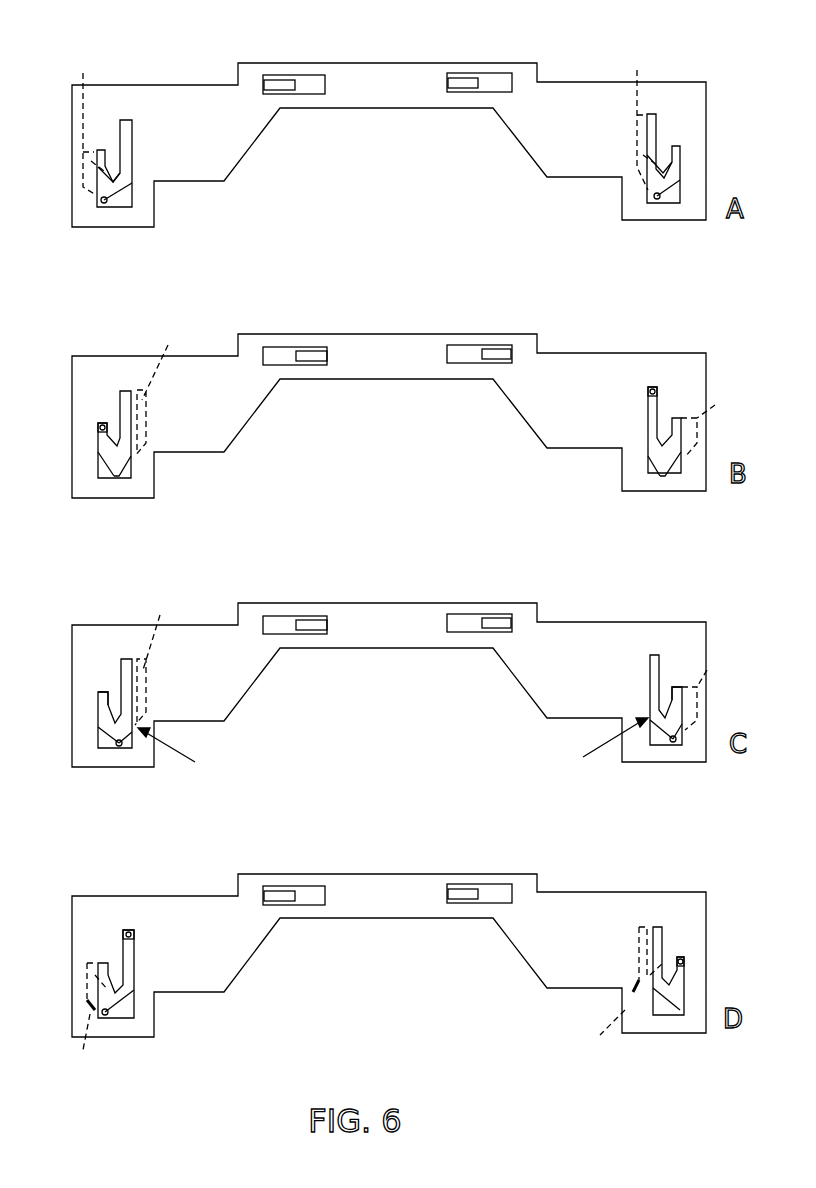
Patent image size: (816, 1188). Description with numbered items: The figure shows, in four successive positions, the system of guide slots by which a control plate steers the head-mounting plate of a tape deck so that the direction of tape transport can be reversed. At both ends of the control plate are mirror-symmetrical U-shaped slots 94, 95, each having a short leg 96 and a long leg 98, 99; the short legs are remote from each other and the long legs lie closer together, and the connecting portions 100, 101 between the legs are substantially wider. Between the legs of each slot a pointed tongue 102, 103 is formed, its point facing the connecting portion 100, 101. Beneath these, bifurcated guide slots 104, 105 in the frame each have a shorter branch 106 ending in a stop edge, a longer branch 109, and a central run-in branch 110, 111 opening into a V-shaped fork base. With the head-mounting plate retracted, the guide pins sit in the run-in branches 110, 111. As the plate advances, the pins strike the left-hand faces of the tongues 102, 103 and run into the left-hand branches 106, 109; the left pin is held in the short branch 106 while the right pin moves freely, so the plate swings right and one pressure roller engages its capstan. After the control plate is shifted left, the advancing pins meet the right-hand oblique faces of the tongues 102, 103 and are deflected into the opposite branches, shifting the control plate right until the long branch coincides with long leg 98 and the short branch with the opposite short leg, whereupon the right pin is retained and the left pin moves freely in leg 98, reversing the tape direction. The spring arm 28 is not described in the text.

The spring arm 28 is at (127, 665).
The U-shaped slot 94 is at (180, 752).
The U-shaped slot 95 is at (601, 747).
The short leg 96 is at (97, 697).
The long leg 98 is at (125, 395).
The long leg 99 is at (652, 660).
The connecting portion 100 is at (103, 476).
The connecting portion 101 is at (660, 470).
The tongue 102 is at (113, 175).
The tongue 103 is at (665, 160).
The bifurcated guide slot 104 is at (86, 1024).
The bifurcated guide slot 105 is at (621, 999).
The short branch 106 is at (85, 122).
The long branch 109 is at (638, 119).
The run-in branch 110 is at (118, 478).
The run-in branch 111 is at (668, 478).